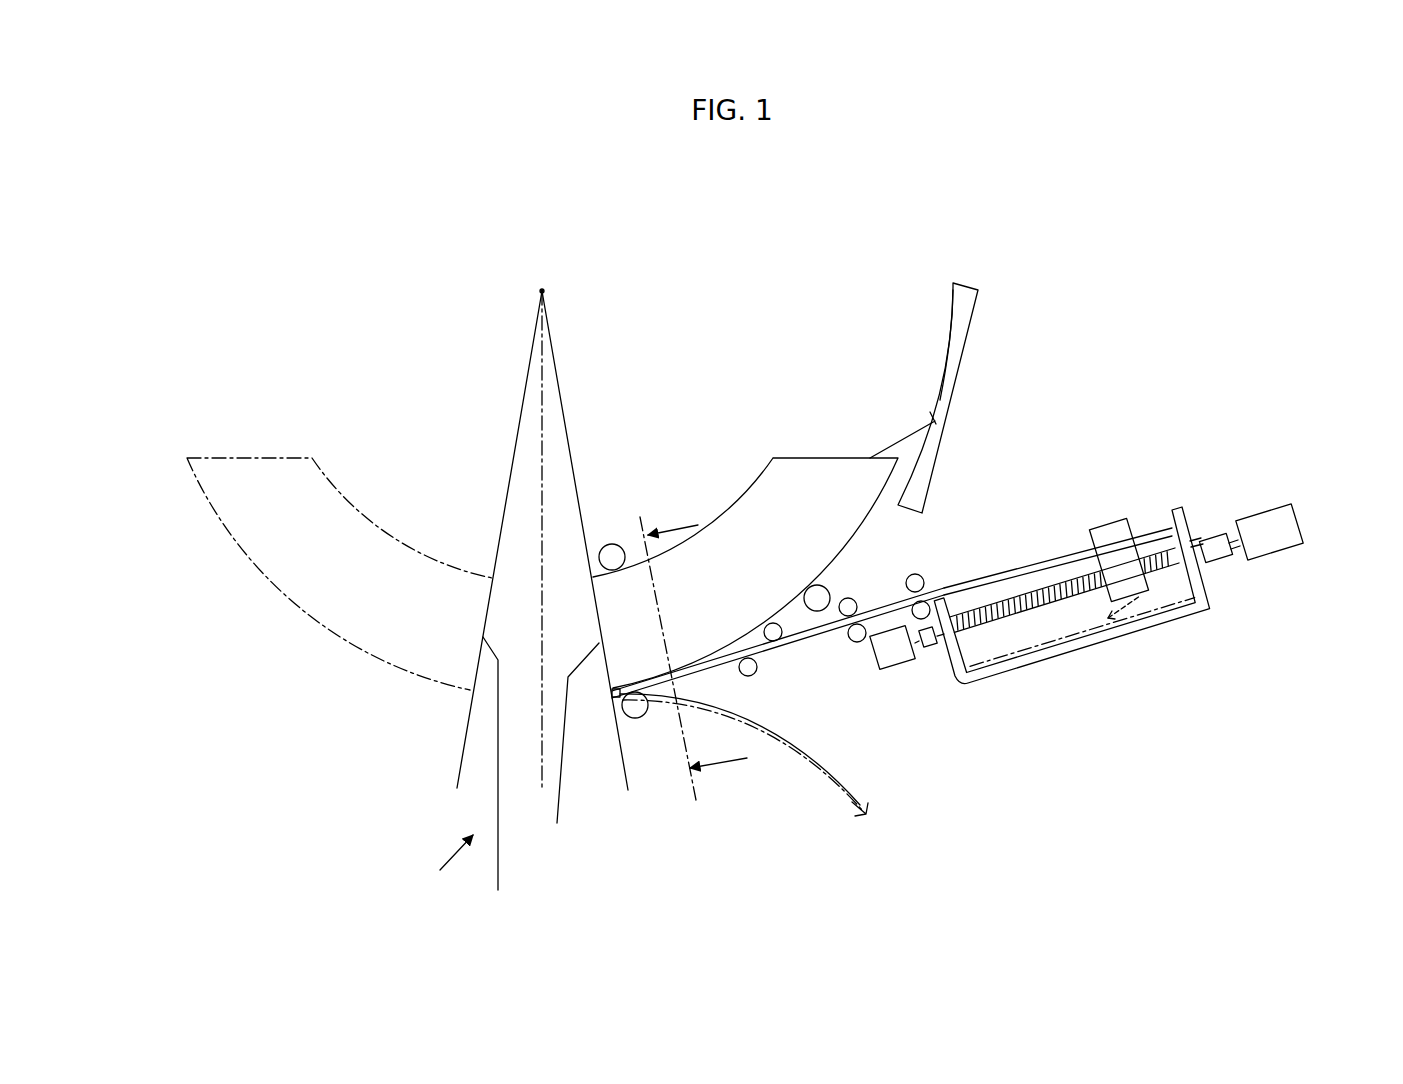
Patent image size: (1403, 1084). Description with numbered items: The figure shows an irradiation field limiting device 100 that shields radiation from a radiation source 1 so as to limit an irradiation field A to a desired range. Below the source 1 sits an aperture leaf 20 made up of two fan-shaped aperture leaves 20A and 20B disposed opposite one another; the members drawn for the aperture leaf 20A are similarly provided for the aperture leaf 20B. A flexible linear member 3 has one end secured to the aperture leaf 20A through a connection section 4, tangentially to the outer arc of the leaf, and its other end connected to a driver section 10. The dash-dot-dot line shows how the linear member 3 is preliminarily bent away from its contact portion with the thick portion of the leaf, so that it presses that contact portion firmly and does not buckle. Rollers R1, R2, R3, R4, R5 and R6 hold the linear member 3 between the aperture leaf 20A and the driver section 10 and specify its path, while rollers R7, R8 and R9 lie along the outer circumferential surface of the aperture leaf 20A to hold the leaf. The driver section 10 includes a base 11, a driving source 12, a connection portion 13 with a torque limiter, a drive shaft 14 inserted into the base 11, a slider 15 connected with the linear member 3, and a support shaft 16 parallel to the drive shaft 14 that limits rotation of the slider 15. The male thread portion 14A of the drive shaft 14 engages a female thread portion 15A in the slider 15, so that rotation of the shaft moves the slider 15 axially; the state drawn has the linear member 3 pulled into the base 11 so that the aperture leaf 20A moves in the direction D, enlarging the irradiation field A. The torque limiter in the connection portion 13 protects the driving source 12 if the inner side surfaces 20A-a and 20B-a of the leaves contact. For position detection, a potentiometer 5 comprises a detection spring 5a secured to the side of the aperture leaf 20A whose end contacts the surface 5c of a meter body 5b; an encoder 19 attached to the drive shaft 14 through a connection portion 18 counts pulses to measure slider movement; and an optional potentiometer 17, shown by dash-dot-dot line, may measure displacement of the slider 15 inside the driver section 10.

The irradiation field limiting device 100 is at (740, 230).
The radiation source 1 is at (544, 290).
The flexible linear member 3 is at (820, 775).
The connection section 4 is at (612, 693).
The potentiometer 5 is at (960, 386).
The detection spring 5a is at (907, 437).
The meter body 5b is at (970, 303).
The surface of the meter body 5c is at (950, 340).
The driver section 10 is at (1092, 425).
The base 11 is at (1197, 612).
The driving source 12 is at (1270, 550).
The connection portion 13 is at (1225, 558).
The drive shaft 14 is at (972, 640).
The male thread portion 14A is at (1002, 623).
The slider 15 is at (1069, 535).
The female thread portion 15A is at (1093, 555).
The support shaft 16 is at (1150, 538).
The potentiometer 17 is at (1112, 636).
The connection portion 18 is at (930, 655).
The encoder 19 is at (886, 668).
The aperture leaf 20 is at (542, 540).
The aperture leaf 20A is at (782, 458).
The aperture leaf 20B is at (280, 458).
The inner side surface 20A-a is at (564, 753).
The inner side surface 20B-a is at (510, 787).
The irradiation field A is at (446, 866).
The movement direction D is at (693, 651).
The roller R1 is at (921, 578).
The roller R2 is at (916, 606).
The roller R3 is at (850, 599).
The roller R4 is at (855, 641).
The roller R5 is at (772, 641).
The roller R6 is at (745, 675).
The roller R7 is at (643, 717).
The roller R8 is at (817, 586).
The roller R9 is at (613, 544).